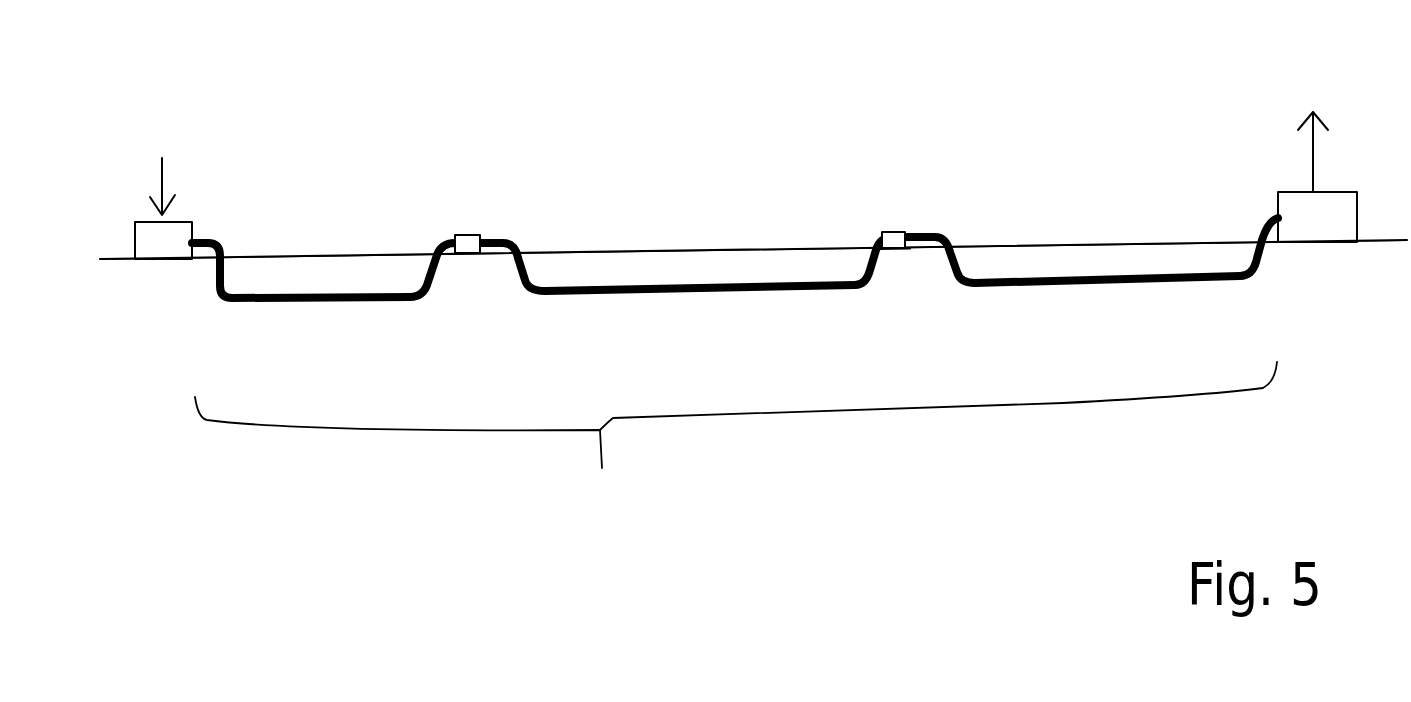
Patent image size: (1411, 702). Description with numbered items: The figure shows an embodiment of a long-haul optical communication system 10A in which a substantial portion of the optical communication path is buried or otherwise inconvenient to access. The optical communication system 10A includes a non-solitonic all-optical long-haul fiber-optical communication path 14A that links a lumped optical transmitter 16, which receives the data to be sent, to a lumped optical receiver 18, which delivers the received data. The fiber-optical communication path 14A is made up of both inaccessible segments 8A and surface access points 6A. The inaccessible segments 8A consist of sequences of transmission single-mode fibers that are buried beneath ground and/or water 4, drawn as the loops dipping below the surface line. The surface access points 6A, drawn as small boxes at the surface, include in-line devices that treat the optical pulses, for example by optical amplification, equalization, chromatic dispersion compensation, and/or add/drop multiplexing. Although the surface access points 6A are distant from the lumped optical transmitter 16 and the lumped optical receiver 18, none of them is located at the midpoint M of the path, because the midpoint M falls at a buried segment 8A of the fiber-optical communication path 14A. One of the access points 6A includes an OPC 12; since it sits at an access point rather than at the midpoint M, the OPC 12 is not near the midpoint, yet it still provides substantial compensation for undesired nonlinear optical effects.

The optical communication system 10A is at (755, 261).
The ground and/or water 4 is at (297, 259).
The surface access points 6A is at (467, 235).
The inaccessible segments 8A is at (320, 303).
The midpoint M is at (735, 306).
The OPC 12 is at (898, 252).
The fiber-optical communication path 14A is at (736, 441).
The lumped optical transmitter 16 is at (163, 263).
The lumped optical receiver 18 is at (1333, 230).